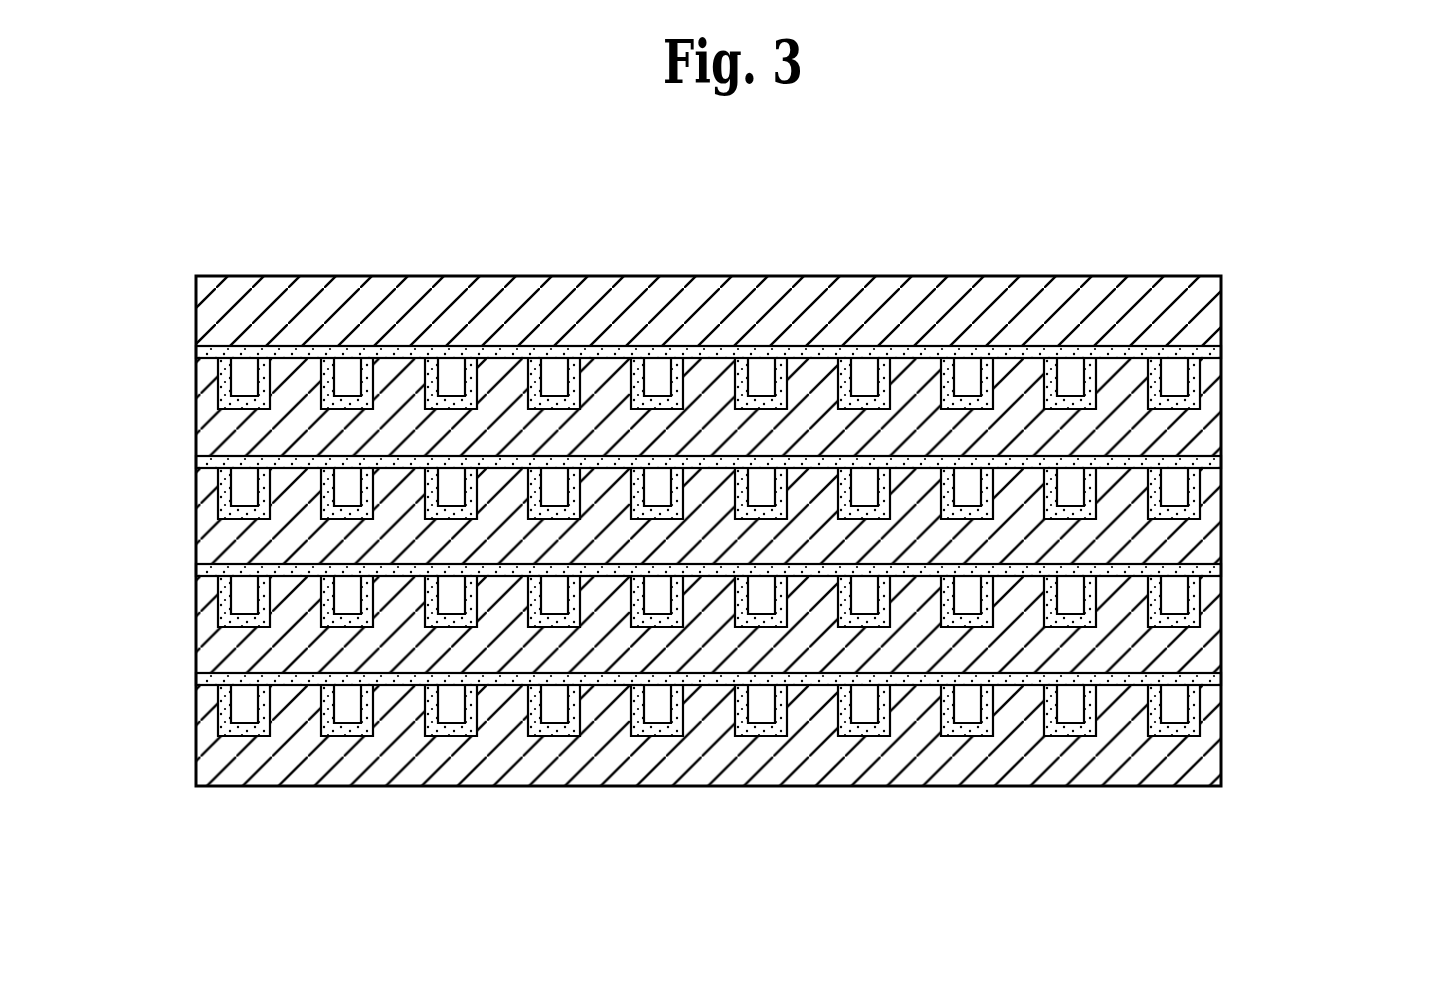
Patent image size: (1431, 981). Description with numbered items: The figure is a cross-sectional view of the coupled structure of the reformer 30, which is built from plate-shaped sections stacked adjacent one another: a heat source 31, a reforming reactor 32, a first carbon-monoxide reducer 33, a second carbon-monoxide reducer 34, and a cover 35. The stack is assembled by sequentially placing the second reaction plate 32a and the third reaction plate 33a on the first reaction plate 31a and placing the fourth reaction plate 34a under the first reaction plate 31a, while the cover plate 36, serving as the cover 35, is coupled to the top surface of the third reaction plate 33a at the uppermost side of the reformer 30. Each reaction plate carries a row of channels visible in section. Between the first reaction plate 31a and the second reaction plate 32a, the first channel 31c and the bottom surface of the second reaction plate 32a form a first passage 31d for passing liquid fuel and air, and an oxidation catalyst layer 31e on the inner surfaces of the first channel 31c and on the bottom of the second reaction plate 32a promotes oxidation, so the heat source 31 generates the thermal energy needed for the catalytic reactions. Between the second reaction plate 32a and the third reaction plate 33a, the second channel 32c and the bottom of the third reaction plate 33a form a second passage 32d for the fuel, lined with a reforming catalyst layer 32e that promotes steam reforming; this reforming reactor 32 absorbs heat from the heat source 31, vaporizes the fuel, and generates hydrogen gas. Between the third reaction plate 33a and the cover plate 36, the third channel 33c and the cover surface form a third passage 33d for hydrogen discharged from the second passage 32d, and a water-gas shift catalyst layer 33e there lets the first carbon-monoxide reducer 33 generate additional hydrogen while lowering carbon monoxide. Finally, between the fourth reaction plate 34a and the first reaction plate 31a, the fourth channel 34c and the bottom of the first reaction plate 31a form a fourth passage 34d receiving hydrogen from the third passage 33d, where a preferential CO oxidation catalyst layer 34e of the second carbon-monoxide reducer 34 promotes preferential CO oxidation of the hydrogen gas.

The reformer 30 is at (1271, 233).
The cover 35 is at (1273, 292).
The cover plate 36 is at (201, 303).
The first carbon-monoxide reducer 33 is at (1336, 383).
The third reaction plate 33a is at (148, 407).
The third channel 33c is at (228, 412).
The third passage 33d is at (1200, 381).
The water-gas shift catalyst layer 33e is at (1197, 363).
The reforming reactor 32 is at (736, 502).
The second reaction plate 32a is at (636, 516).
The second channel 32c is at (660, 520).
The second passage 32d is at (769, 489).
The reforming catalyst layer 32e is at (754, 452).
The heat source 31 is at (736, 610).
The first reaction plate 31a is at (636, 624).
The first channel 31c is at (660, 627).
The first passage 31d is at (769, 597).
The oxidation catalyst layer 31e is at (754, 561).
The second carbon-monoxide reducer 34 is at (736, 721).
The fourth reaction plate 34a is at (636, 735).
The fourth channel 34c is at (660, 738).
The fourth passage 34d is at (769, 707).
The preferential CO oxidation catalyst layer 34e is at (754, 671).